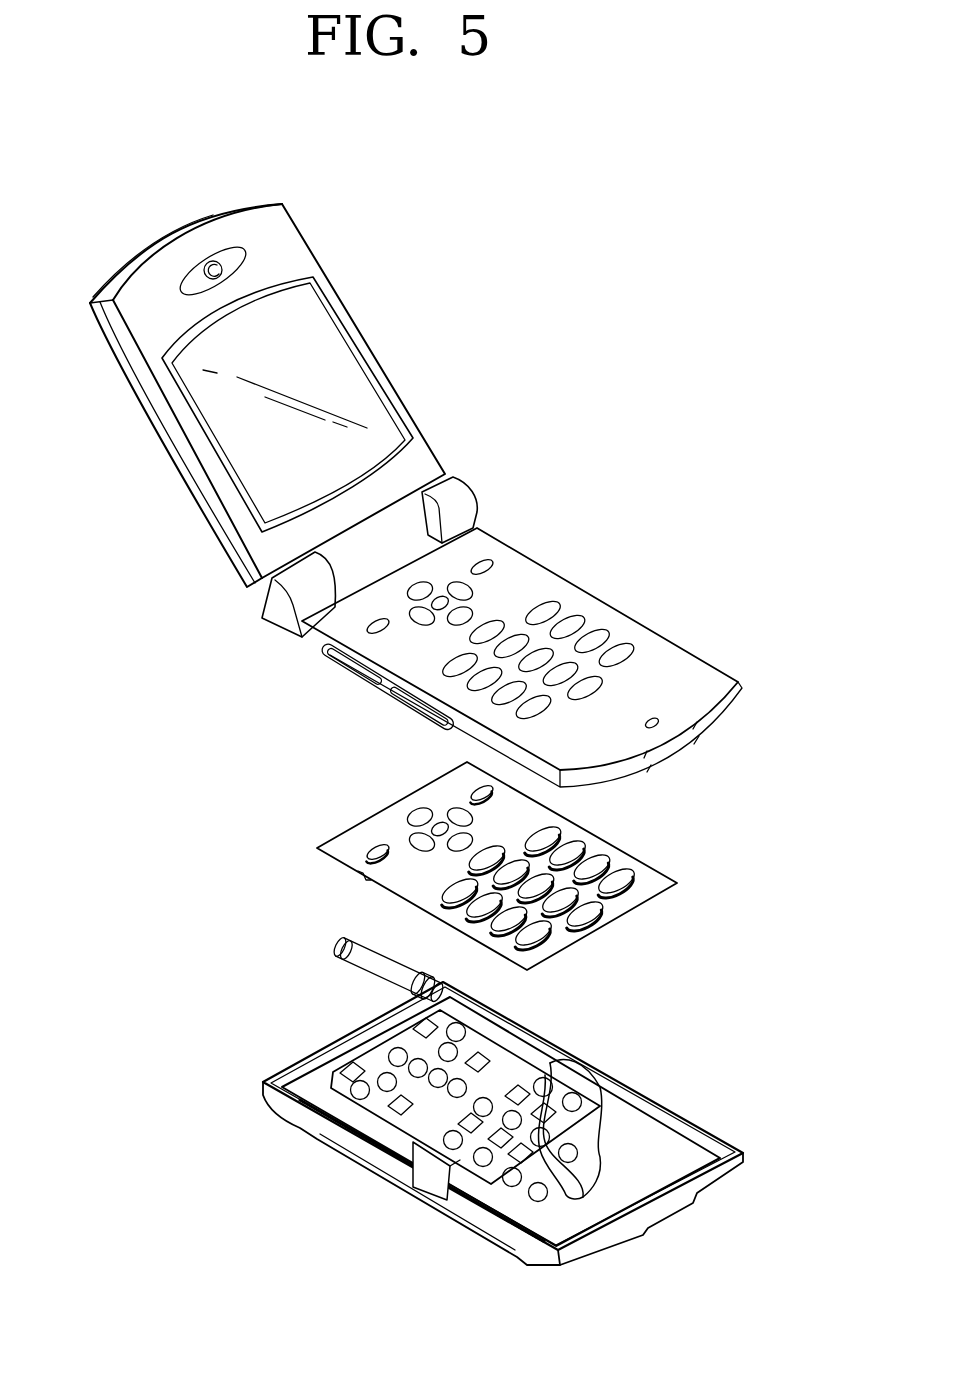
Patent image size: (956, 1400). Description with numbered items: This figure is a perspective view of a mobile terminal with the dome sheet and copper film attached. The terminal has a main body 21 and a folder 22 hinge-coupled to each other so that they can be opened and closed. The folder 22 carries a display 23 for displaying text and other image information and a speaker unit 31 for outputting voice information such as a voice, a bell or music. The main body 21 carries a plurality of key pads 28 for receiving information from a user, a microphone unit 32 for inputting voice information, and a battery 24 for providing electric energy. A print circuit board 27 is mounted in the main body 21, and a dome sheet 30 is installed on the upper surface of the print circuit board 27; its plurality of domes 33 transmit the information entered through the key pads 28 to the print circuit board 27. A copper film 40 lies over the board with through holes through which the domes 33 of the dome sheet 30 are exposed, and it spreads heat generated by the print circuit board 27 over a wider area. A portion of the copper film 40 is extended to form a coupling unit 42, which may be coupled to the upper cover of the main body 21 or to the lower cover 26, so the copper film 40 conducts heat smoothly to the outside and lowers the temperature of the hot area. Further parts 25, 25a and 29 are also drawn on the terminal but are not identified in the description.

The main body 21 is at (637, 616).
The folder 22 is at (143, 401).
The display 23 is at (320, 338).
The battery 24 is at (410, 1199).
The keypad 25 is at (553, 585).
The key button 25a is at (486, 628).
The lower cover 26 is at (713, 1131).
The print circuit board 27 is at (677, 1142).
The key pads 28 is at (605, 862).
The side key 29 is at (356, 674).
The dome sheet 30 is at (577, 1098).
The speaker unit 31 is at (248, 250).
The microphone unit 32 is at (657, 717).
The domes 33 is at (612, 1070).
The copper film 40 is at (510, 1070).
The coupling unit 42 is at (420, 1177).